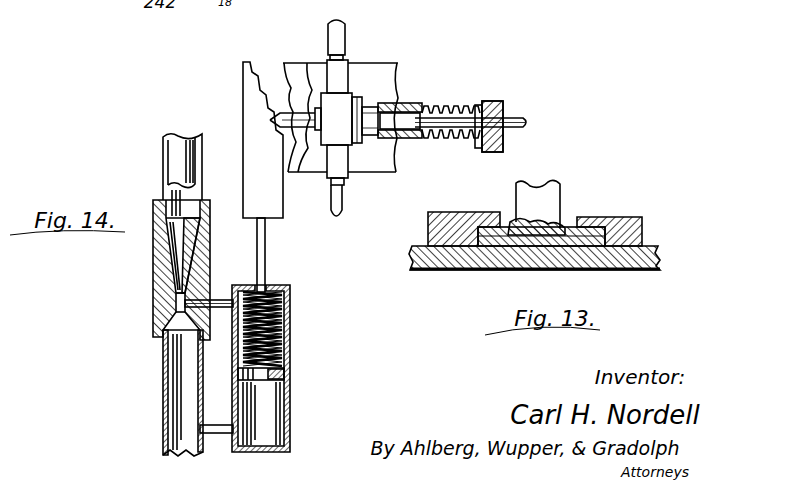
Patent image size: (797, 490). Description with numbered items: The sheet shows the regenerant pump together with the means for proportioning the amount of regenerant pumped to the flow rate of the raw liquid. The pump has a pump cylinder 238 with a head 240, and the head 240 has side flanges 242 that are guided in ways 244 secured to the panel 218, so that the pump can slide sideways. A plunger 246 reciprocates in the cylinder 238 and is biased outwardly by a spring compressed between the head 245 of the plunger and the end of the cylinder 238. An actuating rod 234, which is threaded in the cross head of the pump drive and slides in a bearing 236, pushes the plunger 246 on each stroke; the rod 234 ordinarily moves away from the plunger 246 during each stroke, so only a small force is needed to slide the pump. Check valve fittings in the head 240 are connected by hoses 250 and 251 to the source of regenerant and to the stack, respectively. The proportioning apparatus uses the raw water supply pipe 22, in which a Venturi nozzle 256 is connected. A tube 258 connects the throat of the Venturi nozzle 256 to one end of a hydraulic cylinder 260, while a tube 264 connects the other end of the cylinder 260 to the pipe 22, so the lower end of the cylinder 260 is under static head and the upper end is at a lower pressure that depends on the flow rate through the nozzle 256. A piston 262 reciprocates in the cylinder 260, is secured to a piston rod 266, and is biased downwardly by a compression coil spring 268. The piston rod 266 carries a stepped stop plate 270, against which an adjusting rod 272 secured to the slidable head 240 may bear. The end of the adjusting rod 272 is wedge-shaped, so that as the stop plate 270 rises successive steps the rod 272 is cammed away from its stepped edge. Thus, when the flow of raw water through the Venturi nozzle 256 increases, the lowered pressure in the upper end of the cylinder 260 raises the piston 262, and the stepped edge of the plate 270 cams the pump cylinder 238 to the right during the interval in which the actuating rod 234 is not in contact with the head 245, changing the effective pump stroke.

In FIG. 14, the raw water supply pipe 22 is at (170, 152).
In FIG. 13, the panel 218 is at (562, 262).
In FIG. 14, the actuating rod 234 is at (528, 124).
In FIG. 14, the bearing 236 is at (503, 138).
In FIG. 14, the pump cylinder 238 is at (410, 103).
In FIG. 14, the head 240 is at (340, 105).
In FIG. 13, the head 240 is at (545, 200).
In FIG. 13, the side flanges 242 is at (570, 228).
In FIG. 13, the ways 244 is at (428, 228).
In FIG. 14, the head of the plunger 245 is at (503, 108).
In FIG. 14, the plunger 246 is at (448, 130).
In FIG. 14, the hose 250 is at (336, 222).
In FIG. 14, the hose 251 is at (345, 26).
In FIG. 14, the Venturi nozzle 256 is at (158, 274).
In FIG. 14, the tube 258 is at (226, 300).
In FIG. 14, the hydraulic cylinder 260 is at (292, 342).
In FIG. 14, the piston 262 is at (268, 375).
In FIG. 14, the tube 264 is at (228, 436).
In FIG. 14, the piston rod 266 is at (266, 268).
In FIG. 14, the compression coil spring 268 is at (290, 318).
In FIG. 14, the stepped stop plate 270 is at (248, 140).
In FIG. 14, the adjusting rod 272 is at (302, 110).